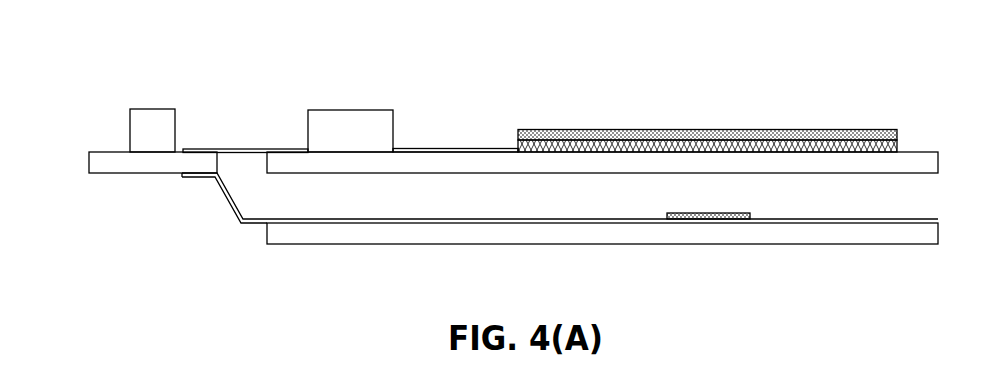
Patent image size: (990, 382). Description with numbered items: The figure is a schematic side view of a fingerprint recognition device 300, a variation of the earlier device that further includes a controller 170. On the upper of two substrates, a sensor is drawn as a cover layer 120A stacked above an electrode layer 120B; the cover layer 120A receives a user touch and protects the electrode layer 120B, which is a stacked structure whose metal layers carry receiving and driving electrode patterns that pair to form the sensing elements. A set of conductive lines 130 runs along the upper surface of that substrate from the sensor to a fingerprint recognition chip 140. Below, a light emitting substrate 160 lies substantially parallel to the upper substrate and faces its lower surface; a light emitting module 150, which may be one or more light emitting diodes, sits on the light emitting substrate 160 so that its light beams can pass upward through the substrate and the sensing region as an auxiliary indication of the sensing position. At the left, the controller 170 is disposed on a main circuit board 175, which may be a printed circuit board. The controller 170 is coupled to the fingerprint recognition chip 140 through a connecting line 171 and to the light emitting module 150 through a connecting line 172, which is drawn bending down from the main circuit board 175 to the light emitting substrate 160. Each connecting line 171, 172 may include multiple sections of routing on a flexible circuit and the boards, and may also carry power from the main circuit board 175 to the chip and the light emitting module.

The fingerprint recognition device 300 is at (509, 135).
The main circuit board 175 is at (112, 151).
The controller 170 is at (152, 130).
The connecting line 171 is at (238, 148).
The fingerprint recognition chip 140 is at (380, 110).
The conductive lines 130 is at (475, 147).
The cover layer 120A is at (897, 131).
The electrode layer 120B is at (899, 146).
The connecting line 172 is at (410, 219).
The light emitting substrate 160 is at (938, 223).
The light emitting module 150 is at (752, 213).